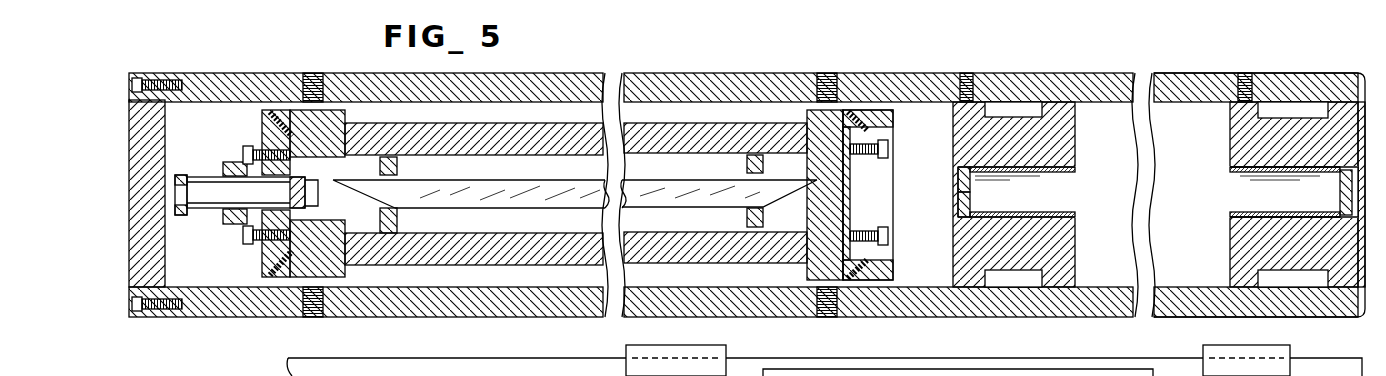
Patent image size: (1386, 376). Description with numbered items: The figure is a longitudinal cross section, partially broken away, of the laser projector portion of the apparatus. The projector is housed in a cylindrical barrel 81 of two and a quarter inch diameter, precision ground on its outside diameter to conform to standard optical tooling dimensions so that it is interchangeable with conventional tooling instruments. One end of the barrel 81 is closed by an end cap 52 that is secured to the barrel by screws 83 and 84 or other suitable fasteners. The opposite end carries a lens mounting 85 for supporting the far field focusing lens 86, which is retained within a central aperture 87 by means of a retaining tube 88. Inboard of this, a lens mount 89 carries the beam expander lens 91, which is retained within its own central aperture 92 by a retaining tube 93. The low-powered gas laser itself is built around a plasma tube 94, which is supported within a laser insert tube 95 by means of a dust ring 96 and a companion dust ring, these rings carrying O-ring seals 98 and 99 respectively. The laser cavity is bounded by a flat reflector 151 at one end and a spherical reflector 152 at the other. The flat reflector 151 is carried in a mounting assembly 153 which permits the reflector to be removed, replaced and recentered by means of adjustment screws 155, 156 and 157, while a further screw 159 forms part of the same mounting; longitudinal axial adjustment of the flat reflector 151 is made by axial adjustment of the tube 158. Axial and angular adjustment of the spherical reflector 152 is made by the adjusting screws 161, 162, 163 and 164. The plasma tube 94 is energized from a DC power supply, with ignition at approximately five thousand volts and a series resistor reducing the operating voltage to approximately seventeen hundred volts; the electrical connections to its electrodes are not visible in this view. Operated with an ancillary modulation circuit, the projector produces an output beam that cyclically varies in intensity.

The end cap 52 is at (130, 105).
The cylindrical barrel 81 is at (562, 88).
The screw 83 is at (153, 78).
The screw 84 is at (153, 312).
The lens mounting 85 is at (1255, 232).
The far field focusing lens 86 is at (1285, 192).
The central aperture 87 is at (1347, 175).
The retaining tube 88 is at (1255, 168).
The lens mount 89 is at (1052, 142).
The beam expander lens 91 is at (958, 184).
The central aperture 92 is at (958, 206).
The retaining tube 93 is at (1050, 177).
The plasma tube 94 is at (556, 196).
The laser insert tube 95 is at (405, 242).
The dust ring 96 is at (389, 157).
The O-ring seal 98 is at (398, 176).
The O-ring seal 99 is at (745, 174).
The flat reflector 151 is at (314, 188).
The spherical reflector 152 is at (835, 190).
The mounting assembly 153 is at (230, 240).
The adjustment screw 155 is at (281, 268).
The adjustment screw 156 is at (245, 152).
The adjustment screw 157 is at (268, 122).
The tube 158 is at (208, 210).
The screw 159 is at (243, 244).
The adjusting screw 161 is at (862, 276).
The adjusting screw 162 is at (890, 238).
The adjusting screw 163 is at (884, 150).
The adjusting screw 164 is at (855, 118).